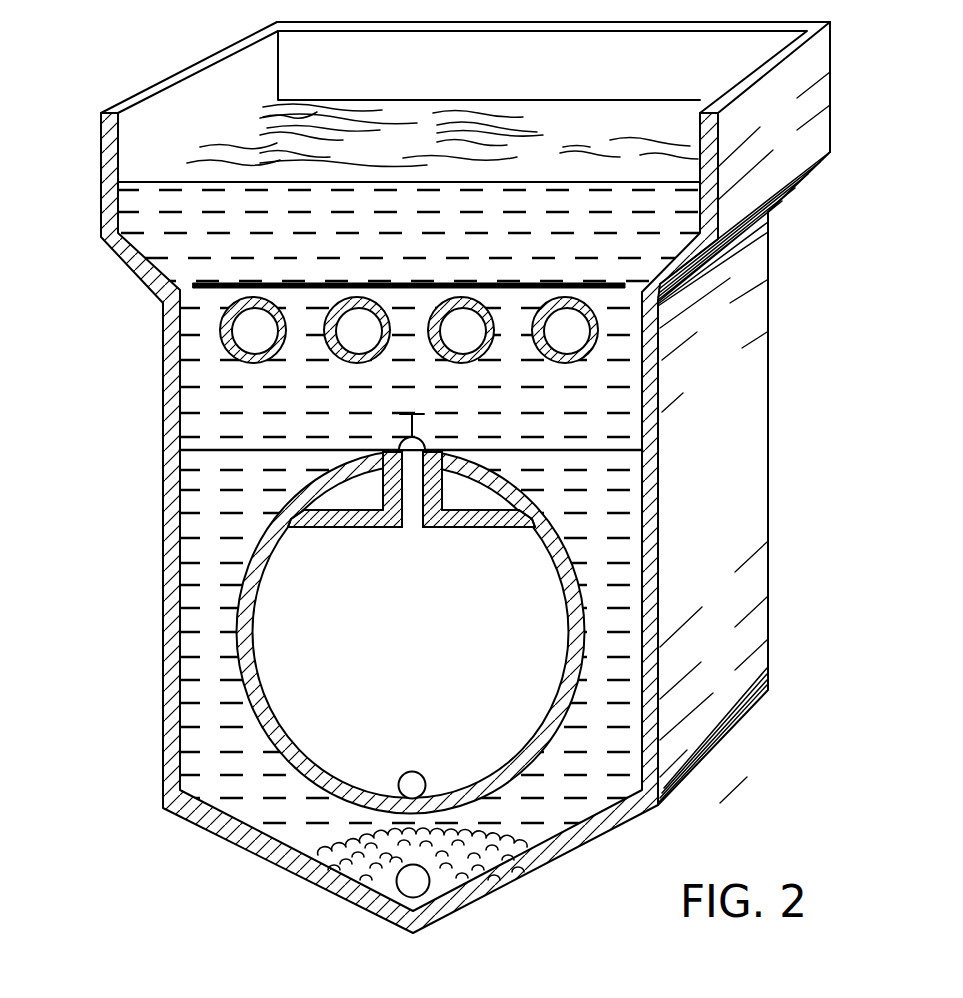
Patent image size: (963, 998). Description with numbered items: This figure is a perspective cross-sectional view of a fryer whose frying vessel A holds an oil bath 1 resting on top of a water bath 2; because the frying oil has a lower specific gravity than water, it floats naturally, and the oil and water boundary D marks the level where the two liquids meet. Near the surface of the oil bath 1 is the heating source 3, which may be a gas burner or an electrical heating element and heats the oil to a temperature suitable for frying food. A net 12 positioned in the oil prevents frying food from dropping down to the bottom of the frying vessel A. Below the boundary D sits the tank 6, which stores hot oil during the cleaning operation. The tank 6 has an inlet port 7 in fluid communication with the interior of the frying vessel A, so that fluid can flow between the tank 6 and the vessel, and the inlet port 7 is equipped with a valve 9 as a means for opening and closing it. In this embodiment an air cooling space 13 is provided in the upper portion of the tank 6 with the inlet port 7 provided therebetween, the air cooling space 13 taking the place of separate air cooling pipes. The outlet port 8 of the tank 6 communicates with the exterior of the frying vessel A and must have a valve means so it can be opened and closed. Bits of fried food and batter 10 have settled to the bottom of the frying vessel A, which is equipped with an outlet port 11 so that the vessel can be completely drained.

The oil bath 1 is at (136, 209).
The water bath 2 is at (192, 778).
The heating source 3 is at (222, 336).
The tank 6 is at (332, 727).
The inlet port 7 is at (413, 503).
The outlet port 8 is at (403, 785).
The valve 9 is at (400, 440).
The bits of fried food and batter 10 is at (390, 873).
The outlet port 11 is at (424, 888).
The net 12 is at (197, 283).
The air cooling space 13 is at (353, 495).
The frying vessel A is at (831, 43).
The oil and water boundary D is at (612, 451).